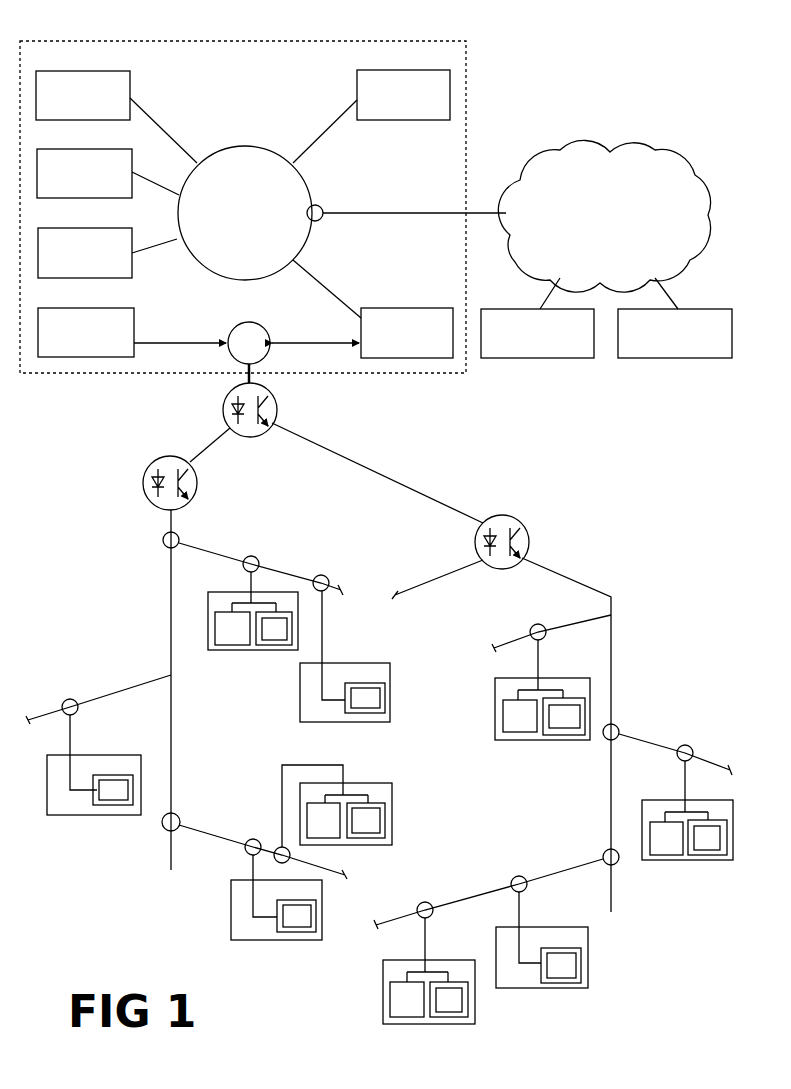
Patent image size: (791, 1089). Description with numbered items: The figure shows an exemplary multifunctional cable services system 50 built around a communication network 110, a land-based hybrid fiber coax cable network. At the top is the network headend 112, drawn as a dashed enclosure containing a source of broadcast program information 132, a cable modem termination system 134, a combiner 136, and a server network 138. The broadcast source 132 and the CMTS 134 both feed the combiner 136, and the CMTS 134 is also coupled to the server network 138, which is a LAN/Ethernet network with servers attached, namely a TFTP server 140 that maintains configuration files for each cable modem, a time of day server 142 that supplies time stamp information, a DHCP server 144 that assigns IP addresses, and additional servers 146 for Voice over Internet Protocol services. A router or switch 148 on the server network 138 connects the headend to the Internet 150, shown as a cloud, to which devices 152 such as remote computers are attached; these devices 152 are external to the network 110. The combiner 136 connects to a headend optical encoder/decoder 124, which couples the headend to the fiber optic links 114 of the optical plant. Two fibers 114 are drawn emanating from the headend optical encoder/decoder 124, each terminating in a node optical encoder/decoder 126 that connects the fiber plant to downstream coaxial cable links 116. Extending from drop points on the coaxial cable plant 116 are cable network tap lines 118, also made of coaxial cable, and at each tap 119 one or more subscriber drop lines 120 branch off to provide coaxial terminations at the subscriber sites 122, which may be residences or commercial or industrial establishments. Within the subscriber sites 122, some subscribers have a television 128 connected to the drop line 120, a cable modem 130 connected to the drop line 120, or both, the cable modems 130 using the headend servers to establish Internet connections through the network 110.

The multifunctional cable services system 50 is at (722, 92).
The communication network 110 is at (480, 447).
The network headend 112 is at (84, 43).
The fiber optic links 114 is at (212, 440).
The coaxial cable links 116 is at (170, 626).
The cable network tap lines 118 is at (280, 573).
The taps 119 is at (258, 556).
The subscriber drop lines 120 is at (245, 588).
The subscriber sites 122 is at (212, 616).
The headend optical encoder/decoder 124 is at (222, 406).
The node optical encoder/decoders 126 is at (148, 463).
The television 128 is at (274, 646).
The cable modem 130 is at (226, 646).
The source of broadcast program information 132 is at (88, 308).
The cable modem termination system 134 is at (412, 308).
The combiner 136 is at (240, 324).
The server network 138 is at (240, 147).
The TFTP server 140 is at (87, 228).
The time of day server 142 is at (86, 149).
The DHCP server 144 is at (85, 71).
The additional servers 146 is at (408, 70).
The router or switch 148 is at (322, 206).
The Internet 150 is at (643, 146).
The devices 152 is at (526, 308).